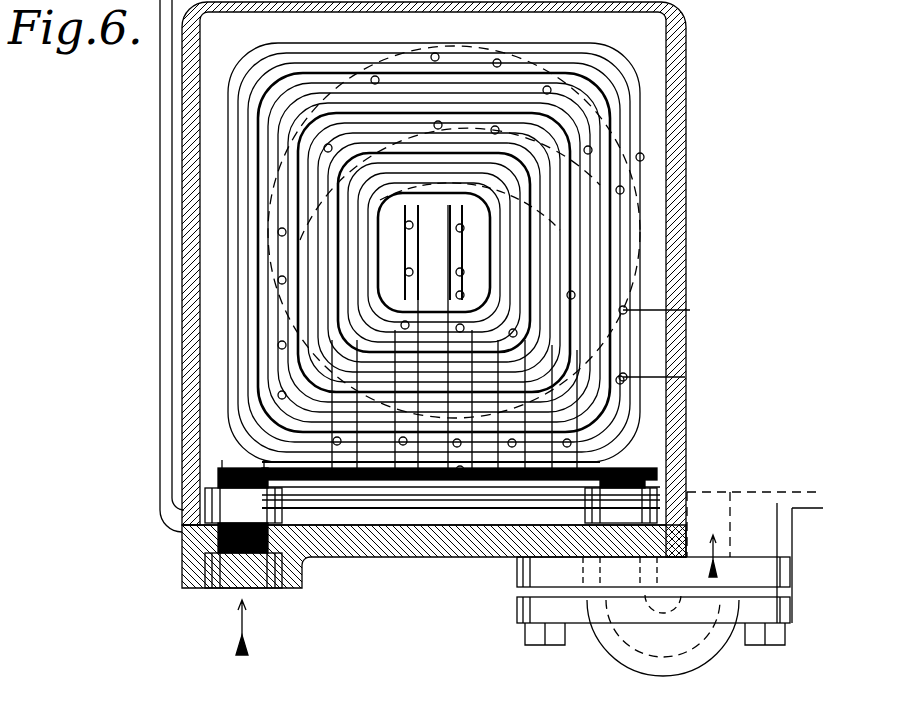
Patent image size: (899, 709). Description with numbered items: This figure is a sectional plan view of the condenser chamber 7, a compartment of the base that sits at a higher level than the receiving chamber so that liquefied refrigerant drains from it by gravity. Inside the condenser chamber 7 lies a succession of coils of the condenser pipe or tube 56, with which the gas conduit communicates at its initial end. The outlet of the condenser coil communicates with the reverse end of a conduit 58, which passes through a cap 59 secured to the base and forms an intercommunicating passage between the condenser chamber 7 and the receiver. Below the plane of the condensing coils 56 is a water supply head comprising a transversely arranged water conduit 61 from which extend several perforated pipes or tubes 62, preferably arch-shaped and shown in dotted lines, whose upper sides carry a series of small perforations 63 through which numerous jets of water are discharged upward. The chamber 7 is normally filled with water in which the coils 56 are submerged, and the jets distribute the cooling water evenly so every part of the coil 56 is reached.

The condenser chamber 7 is at (655, 356).
The condenser pipe or tube 56 is at (620, 283).
The conduit 58 is at (718, 660).
The cap 59 is at (605, 645).
The water conduit 61 is at (418, 487).
The perforated pipes or tubes 62 is at (645, 156).
The perforations 63 is at (700, 312).